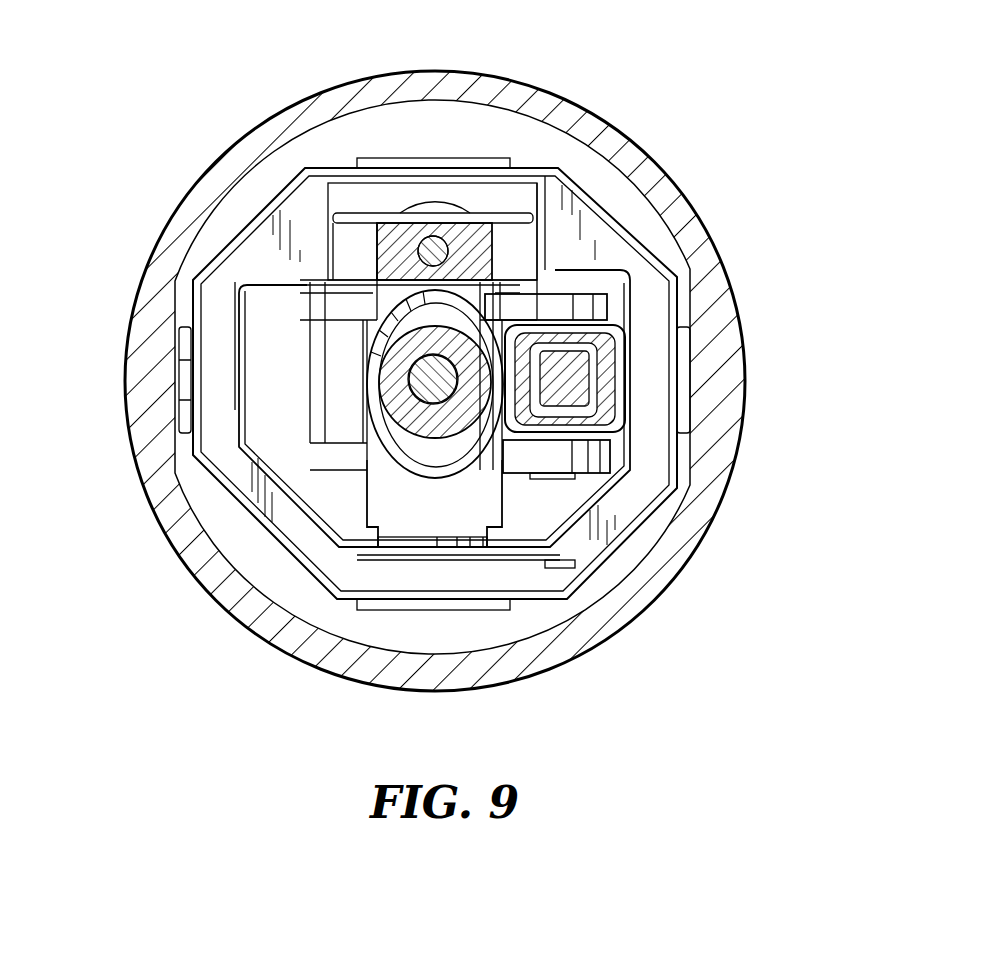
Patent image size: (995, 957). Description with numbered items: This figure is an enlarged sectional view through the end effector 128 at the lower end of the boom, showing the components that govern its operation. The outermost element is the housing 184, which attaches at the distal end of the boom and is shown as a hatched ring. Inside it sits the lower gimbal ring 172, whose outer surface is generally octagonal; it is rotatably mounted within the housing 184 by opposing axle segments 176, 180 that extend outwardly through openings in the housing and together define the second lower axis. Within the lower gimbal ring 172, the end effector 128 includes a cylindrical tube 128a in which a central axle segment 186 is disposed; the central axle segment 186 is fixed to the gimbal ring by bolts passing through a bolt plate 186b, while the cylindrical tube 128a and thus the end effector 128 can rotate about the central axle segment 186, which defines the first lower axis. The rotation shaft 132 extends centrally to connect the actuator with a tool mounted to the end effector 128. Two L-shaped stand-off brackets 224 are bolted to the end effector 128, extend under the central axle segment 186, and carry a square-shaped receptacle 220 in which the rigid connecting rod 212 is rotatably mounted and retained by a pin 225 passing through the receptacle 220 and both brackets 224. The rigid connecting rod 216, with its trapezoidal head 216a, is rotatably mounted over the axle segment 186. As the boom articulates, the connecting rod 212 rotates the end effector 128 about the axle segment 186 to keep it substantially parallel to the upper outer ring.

The end effector 128 is at (342, 388).
The cylindrical tube 128a is at (415, 517).
The rotation shaft 132 is at (430, 432).
The lower gimbal ring 172 is at (575, 568).
The axle segment 176 is at (188, 357).
The axle segment 180 is at (683, 368).
The housing 184 is at (487, 78).
The central axle segment 186 is at (442, 540).
The bolt plate 186b is at (557, 568).
The rigid connecting rod 212 is at (572, 387).
The rigid connecting rod 216 is at (518, 242).
The trapezoidal head 216a is at (560, 310).
The square-shaped receptacle 220 is at (612, 322).
The L-shaped stand-off bracket 224 is at (474, 238).
The pin 225 is at (572, 473).